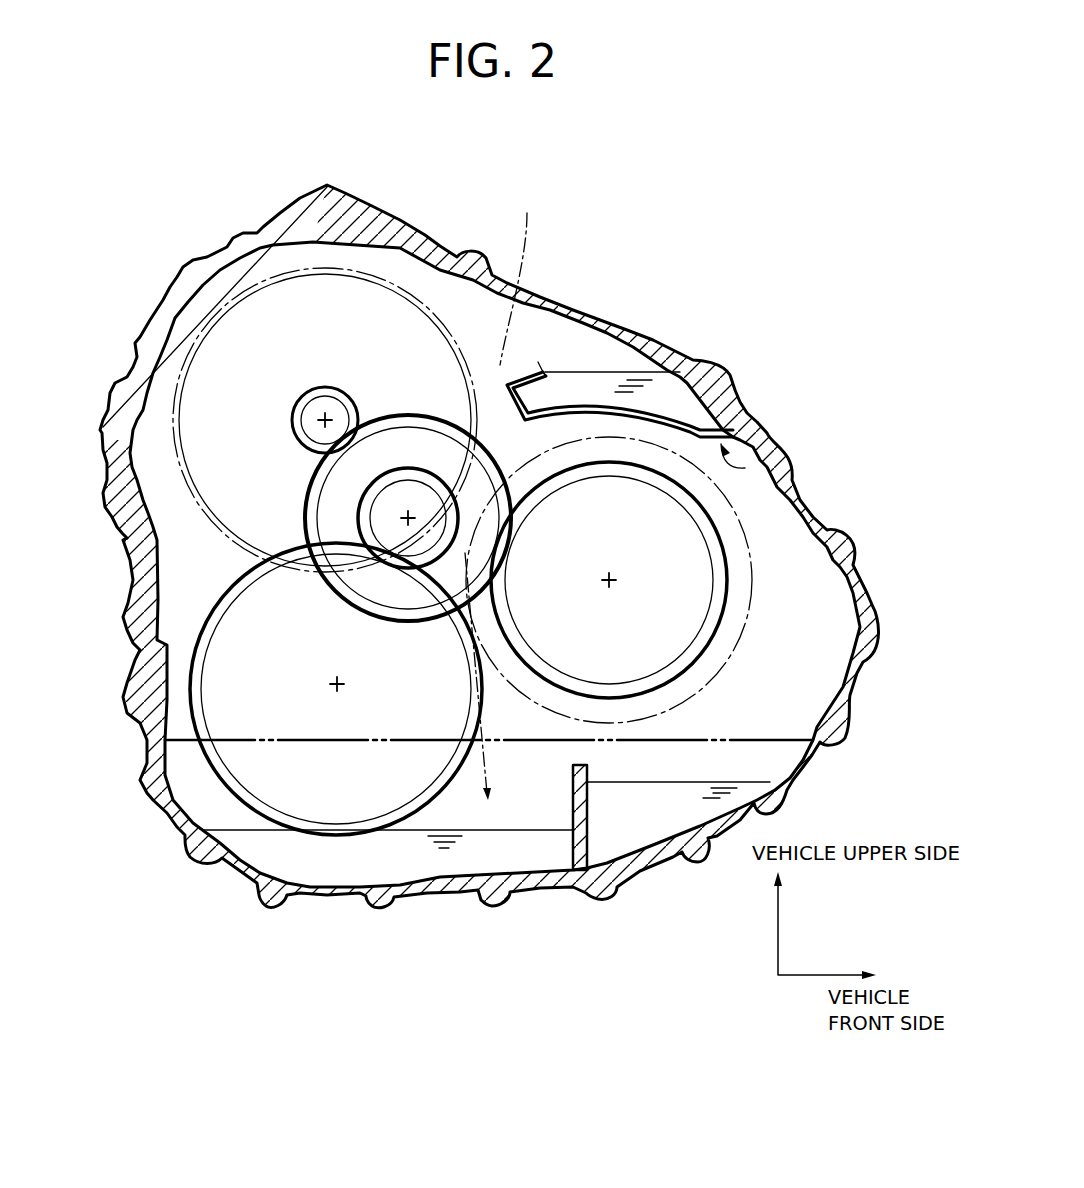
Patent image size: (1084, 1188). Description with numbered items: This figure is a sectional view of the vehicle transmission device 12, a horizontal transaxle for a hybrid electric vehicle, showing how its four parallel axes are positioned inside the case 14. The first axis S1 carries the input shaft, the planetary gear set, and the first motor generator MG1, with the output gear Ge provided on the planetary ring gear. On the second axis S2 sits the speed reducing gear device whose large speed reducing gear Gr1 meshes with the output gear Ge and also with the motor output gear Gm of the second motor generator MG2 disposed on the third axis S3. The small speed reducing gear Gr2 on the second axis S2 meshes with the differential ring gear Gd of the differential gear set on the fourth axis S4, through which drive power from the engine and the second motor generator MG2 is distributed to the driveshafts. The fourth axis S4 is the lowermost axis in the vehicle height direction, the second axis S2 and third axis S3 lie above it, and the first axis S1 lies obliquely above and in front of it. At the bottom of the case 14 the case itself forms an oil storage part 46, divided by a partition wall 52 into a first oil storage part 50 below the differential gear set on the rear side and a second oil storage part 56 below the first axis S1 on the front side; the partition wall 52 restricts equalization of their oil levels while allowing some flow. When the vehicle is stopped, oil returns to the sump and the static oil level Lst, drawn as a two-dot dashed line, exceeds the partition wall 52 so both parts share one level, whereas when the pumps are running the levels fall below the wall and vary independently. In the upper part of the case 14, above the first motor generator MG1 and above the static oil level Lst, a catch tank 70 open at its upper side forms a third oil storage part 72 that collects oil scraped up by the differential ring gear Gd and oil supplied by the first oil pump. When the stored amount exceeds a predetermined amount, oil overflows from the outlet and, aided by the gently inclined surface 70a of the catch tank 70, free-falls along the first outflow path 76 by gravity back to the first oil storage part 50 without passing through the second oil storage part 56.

The vehicle transmission device 12 is at (690, 225).
The case 14 is at (770, 463).
The oil storage part 46 is at (790, 725).
The first oil storage part 50 is at (333, 867).
The partition wall 52 is at (585, 845).
The second oil storage part 56 is at (675, 812).
The catch tank 70 is at (743, 467).
The inclined surface 70a is at (538, 362).
The third oil storage part 72 is at (567, 388).
The first outflow path 76 is at (520, 272).
The output gear Ge is at (672, 480).
The motor output gear Gm is at (293, 425).
The differential ring gear Gd is at (205, 665).
The large speed reducing gear Gr1 is at (480, 740).
The small speed reducing gear Gr2 is at (367, 528).
The first axis S1 is at (623, 568).
The second axis S2 is at (417, 505).
The third axis S3 is at (322, 417).
The fourth axis S4 is at (326, 668).
The first motor generator MG1 is at (753, 580).
The second motor generator MG2 is at (227, 310).
The static oil level Lst is at (489, 724).